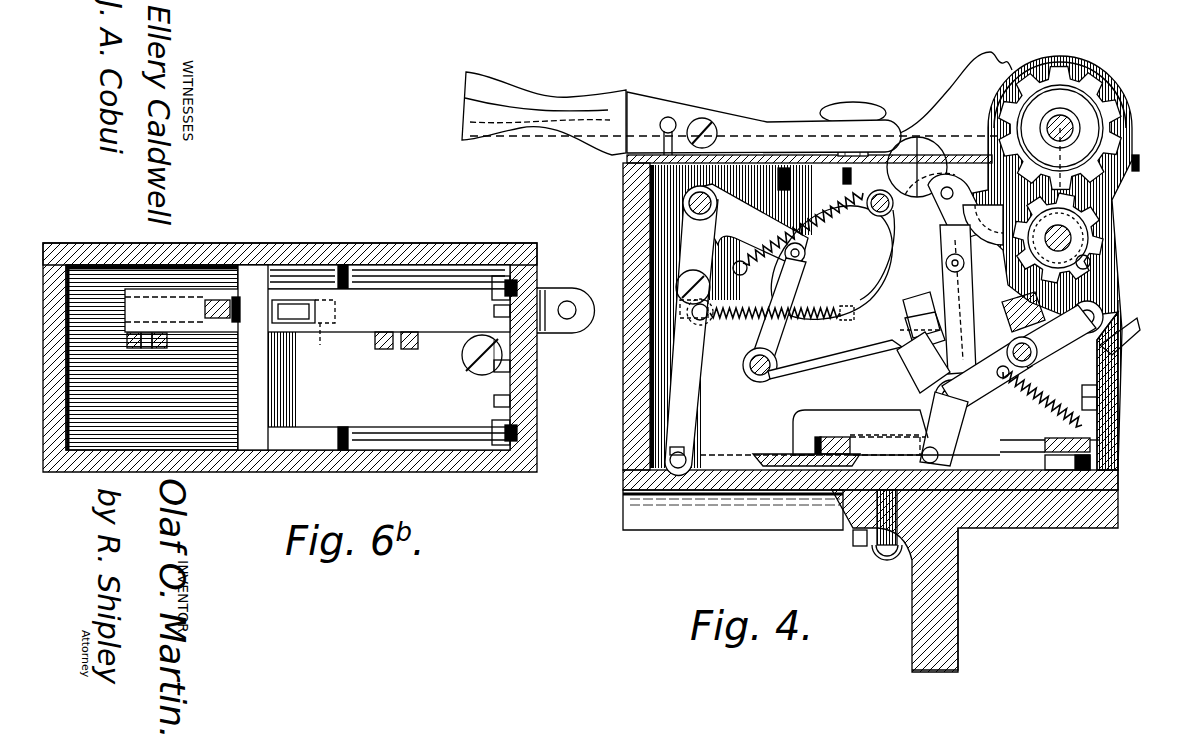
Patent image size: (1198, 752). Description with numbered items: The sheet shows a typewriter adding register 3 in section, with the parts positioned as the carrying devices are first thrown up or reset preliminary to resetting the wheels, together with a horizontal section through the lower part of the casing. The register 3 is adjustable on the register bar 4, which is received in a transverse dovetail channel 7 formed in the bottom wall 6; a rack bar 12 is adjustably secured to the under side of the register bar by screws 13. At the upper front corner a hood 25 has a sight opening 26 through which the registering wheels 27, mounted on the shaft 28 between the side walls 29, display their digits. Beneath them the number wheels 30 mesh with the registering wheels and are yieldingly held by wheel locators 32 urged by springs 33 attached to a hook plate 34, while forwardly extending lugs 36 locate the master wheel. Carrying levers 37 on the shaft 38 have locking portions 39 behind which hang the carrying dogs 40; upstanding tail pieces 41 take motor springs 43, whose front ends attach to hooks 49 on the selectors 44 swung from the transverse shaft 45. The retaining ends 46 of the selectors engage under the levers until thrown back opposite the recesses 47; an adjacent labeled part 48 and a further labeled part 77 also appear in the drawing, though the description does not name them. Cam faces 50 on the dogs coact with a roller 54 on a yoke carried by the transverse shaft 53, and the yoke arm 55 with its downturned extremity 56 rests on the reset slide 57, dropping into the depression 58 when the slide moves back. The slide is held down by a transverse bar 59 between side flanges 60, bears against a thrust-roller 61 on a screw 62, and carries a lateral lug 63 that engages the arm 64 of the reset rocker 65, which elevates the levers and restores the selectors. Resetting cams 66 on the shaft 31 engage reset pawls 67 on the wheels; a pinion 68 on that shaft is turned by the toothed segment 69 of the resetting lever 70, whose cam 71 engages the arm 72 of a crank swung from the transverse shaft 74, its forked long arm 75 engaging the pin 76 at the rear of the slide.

In FIG. 6B, the register 3 is at (538, 243).
In FIG. 4, the register bar 4 is at (960, 540).
In FIG. 4, the bottom wall 6 is at (1100, 512).
In FIG. 4, the transverse dovetail channel 7 is at (1052, 520).
In FIG. 4, the rack bar 12 is at (858, 548).
In FIG. 4, the screws 13 is at (882, 562).
In FIG. 4, the hood 25 is at (1040, 60).
In FIG. 4, the sight opening 26 is at (1118, 96).
In FIG. 4, the registering wheels 27 is at (1090, 112).
In FIG. 4, the shaft 28 is at (1075, 126).
In FIG. 6B, the side walls 29 is at (290, 243).
In FIG. 4, the side walls 29 is at (1087, 70).
In FIG. 4, the number wheels 30 is at (1080, 205).
In FIG. 4, the shaft 31 is at (1085, 232).
In FIG. 4, the wheel locators 32 is at (1103, 308).
In FIG. 4, the springs 33 is at (1040, 390).
In FIG. 6B, the hook plate 34 is at (505, 379).
In FIG. 4, the hook plate 34 is at (1098, 395).
In FIG. 4, the lugs 36 is at (1130, 328).
In FIG. 4, the carrying levers 37 is at (812, 366).
In FIG. 4, the shaft 38 is at (752, 378).
In FIG. 4, the locking portions 39 is at (970, 152).
In FIG. 4, the carrying dogs 40 is at (940, 210).
In FIG. 4, the tail pieces 41 is at (752, 292).
In FIG. 4, the motor springs 43 is at (852, 218).
In FIG. 4, the selectors 44 is at (935, 296).
In FIG. 4, the transverse shaft 45 is at (840, 272).
In FIG. 4, the retaining ends 46 is at (905, 332).
In FIG. 4, the recesses 47 is at (903, 312).
In FIG. 4, the block 48 is at (1085, 285).
In FIG. 4, the hooks 49 is at (870, 190).
In FIG. 4, the cam faces 50 is at (950, 237).
In FIG. 4, the transverse shaft 53 is at (970, 399).
In FIG. 4, the roller 54 is at (946, 263).
In FIG. 6B, the arm 55 is at (330, 330).
In FIG. 4, the arm 55 is at (880, 420).
In FIG. 6B, the downturned extremity 56 is at (205, 310).
In FIG. 4, the downturned extremity 56 is at (800, 445).
In FIG. 6B, the reset slide 57 is at (317, 310).
In FIG. 6B, the depression 58 is at (300, 325).
In FIG. 4, the depression 58 is at (762, 455).
In FIG. 6B, the transverse bar 59 is at (262, 406).
In FIG. 4, the transverse bar 59 is at (838, 437).
In FIG. 6B, the side flanges 60 is at (405, 270).
In FIG. 4, the side flanges 60 is at (1000, 446).
In FIG. 6B, the thrust-roller 61 is at (484, 385).
In FIG. 4, the thrust-roller 61 is at (1092, 468).
In FIG. 6B, the screw 62 is at (472, 370).
In FIG. 4, the screw 62 is at (1092, 446).
In FIG. 6B, the lateral lug 63 is at (385, 350).
In FIG. 4, the lateral lug 63 is at (958, 414).
In FIG. 6B, the arm 64 is at (415, 350).
In FIG. 4, the arm 64 is at (935, 398).
In FIG. 4, the reset rocker 65 is at (920, 362).
In FIG. 4, the resetting cams 66 is at (1078, 240).
In FIG. 4, the reset pawls 67 is at (1095, 255).
In FIG. 4, the pinion 68 is at (1100, 195).
In FIG. 4, the toothed segment 69 is at (958, 84).
In FIG. 4, the resetting lever 70 is at (583, 92).
In FIG. 4, the cam 71 is at (860, 272).
In FIG. 4, the arm 72 is at (762, 248).
In FIG. 4, the transverse shaft 74 is at (683, 204).
In FIG. 6B, the long arm 75 is at (158, 348).
In FIG. 4, the long arm 75 is at (688, 352).
In FIG. 6B, the pin 76 is at (140, 348).
In FIG. 4, the pin 76 is at (680, 452).
In FIG. 4, the spring 77 is at (798, 302).